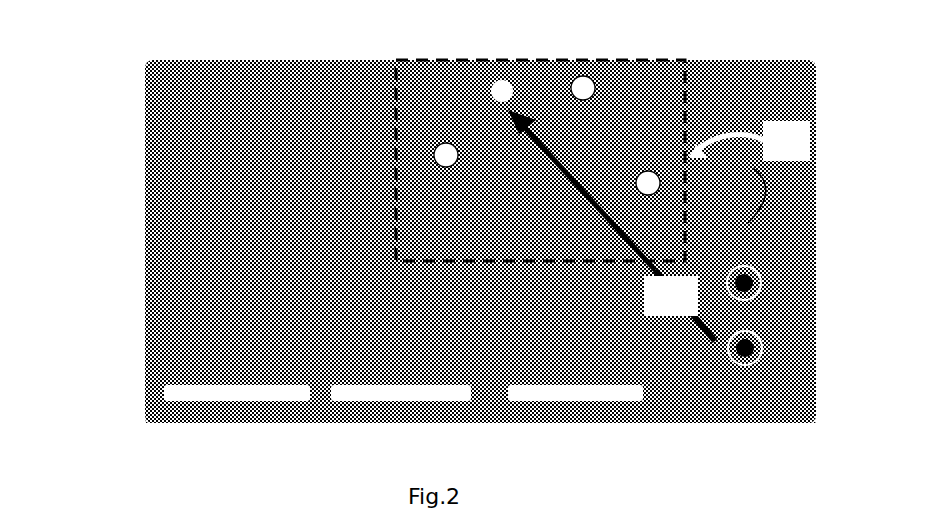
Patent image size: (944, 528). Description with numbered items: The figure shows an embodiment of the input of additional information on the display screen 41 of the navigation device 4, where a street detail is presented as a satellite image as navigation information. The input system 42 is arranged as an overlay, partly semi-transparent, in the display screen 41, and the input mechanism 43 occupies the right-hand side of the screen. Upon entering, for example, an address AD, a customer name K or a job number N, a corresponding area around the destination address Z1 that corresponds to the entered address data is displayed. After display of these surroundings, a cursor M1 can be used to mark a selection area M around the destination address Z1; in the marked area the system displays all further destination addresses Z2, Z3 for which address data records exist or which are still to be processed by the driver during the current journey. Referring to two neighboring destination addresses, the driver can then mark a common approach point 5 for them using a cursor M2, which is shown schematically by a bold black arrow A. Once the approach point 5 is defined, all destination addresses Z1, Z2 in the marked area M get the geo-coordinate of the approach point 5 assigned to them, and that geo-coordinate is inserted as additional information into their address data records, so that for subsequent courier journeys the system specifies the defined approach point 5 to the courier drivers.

The navigation device 4 is at (96, 80).
The approach point 5 is at (500, 83).
The display screen 41 is at (137, 243).
The input system 42 is at (156, 365).
The input mechanism 43 is at (736, 392).
The address AD is at (216, 386).
The customer name K is at (367, 387).
The job number N is at (541, 388).
The selection area M is at (750, 172).
The cursor M1 is at (756, 265).
The cursor M2 is at (757, 333).
The bold black arrow A is at (611, 225).
The destination address Z1 is at (446, 155).
The destination address Z2 is at (583, 88).
The destination address Z3 is at (648, 183).